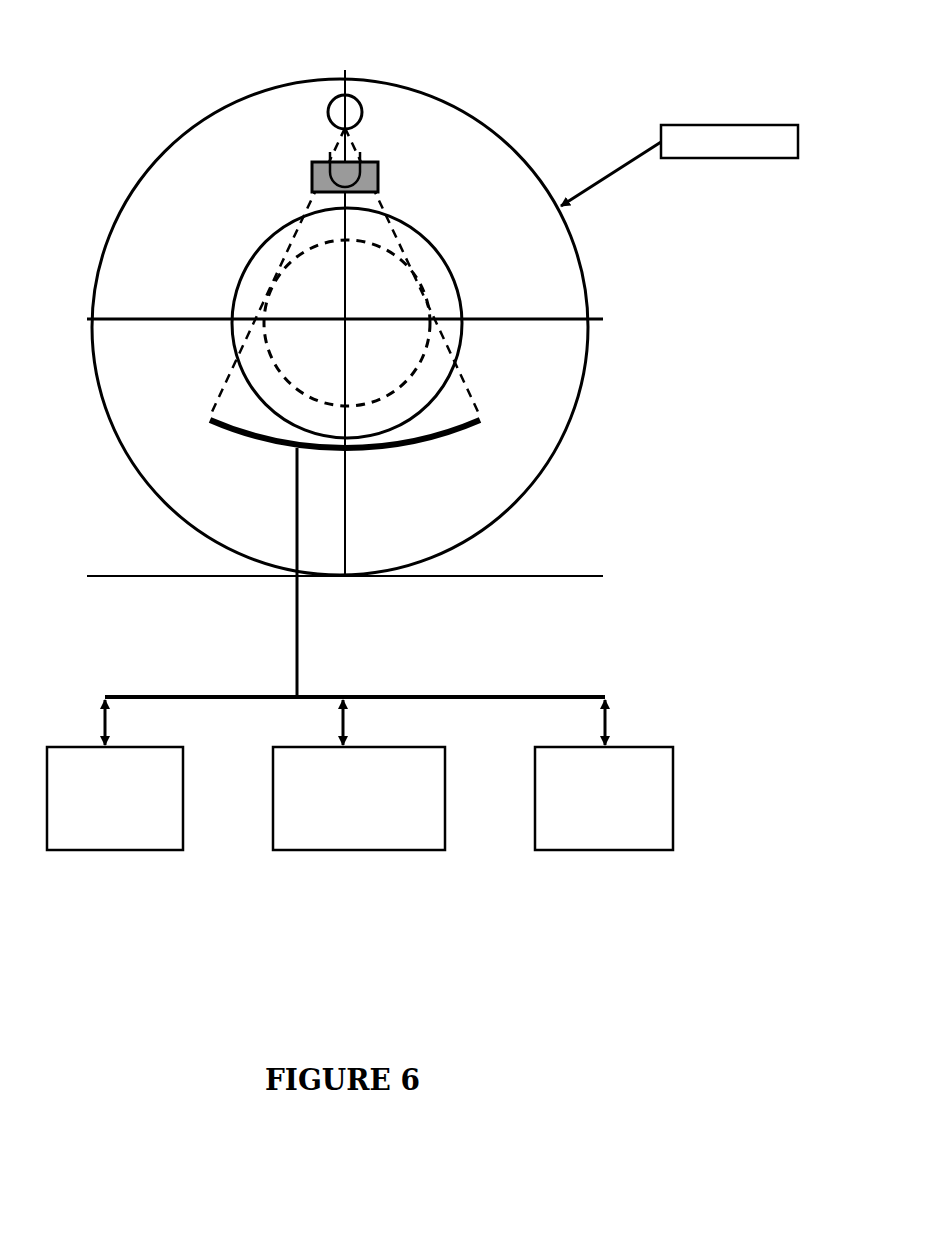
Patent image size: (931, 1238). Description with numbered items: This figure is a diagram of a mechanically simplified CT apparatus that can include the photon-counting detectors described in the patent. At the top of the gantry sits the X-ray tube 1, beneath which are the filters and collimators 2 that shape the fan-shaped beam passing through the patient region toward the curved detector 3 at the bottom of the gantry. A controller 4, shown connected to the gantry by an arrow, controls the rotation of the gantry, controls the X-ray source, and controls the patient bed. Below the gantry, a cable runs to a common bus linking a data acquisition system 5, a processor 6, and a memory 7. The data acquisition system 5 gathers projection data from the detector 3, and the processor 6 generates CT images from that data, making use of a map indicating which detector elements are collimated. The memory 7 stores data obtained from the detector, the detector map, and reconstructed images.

The X-ray tube 1 is at (357, 98).
The filters and collimators 2 is at (380, 165).
The detector 3 is at (478, 421).
The controller 4 is at (775, 158).
The data acquisition system 5 is at (123, 850).
The processor 6 is at (397, 850).
The memory 7 is at (637, 850).